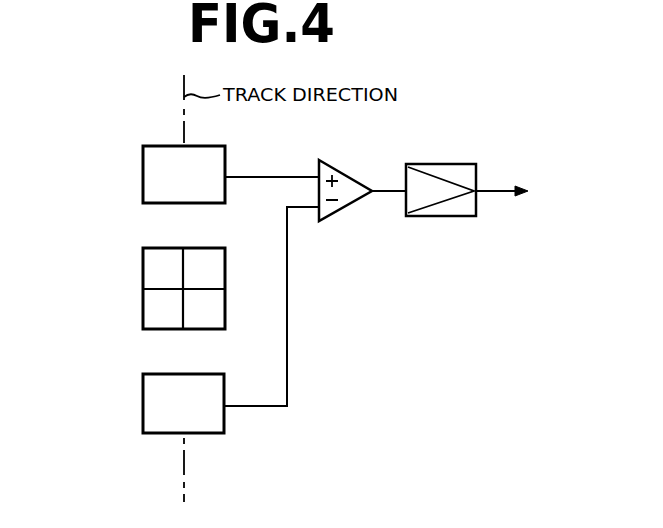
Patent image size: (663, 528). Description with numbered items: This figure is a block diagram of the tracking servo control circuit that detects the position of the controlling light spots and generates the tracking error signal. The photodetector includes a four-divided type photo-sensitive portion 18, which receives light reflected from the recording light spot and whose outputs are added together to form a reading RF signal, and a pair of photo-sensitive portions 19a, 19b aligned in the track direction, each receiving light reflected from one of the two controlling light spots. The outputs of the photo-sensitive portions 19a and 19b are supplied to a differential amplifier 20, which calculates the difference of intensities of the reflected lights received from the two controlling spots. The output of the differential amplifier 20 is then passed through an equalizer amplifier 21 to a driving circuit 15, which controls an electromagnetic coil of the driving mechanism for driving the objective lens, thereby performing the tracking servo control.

The photo-sensitive portion 19a is at (143, 182).
The photo-sensitive portion 19b is at (143, 408).
The four-divided type photo-sensitive portion 18 is at (143, 272).
The differential amplifier 20 is at (345, 208).
The equalizer amplifier 21 is at (453, 216).
The driving circuit 15 is at (525, 193).